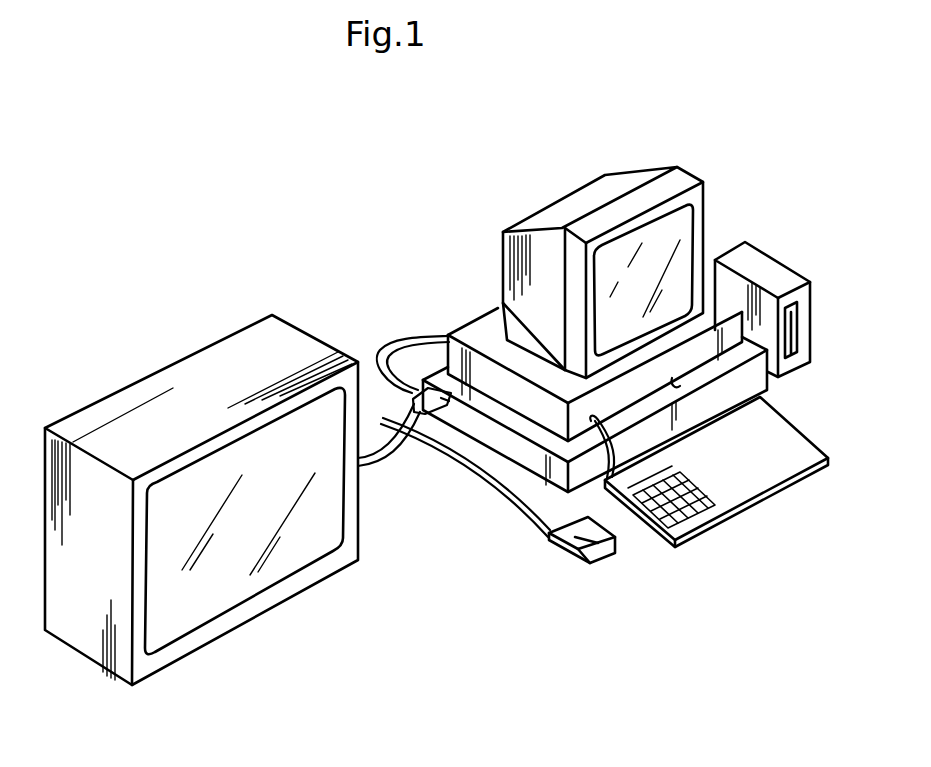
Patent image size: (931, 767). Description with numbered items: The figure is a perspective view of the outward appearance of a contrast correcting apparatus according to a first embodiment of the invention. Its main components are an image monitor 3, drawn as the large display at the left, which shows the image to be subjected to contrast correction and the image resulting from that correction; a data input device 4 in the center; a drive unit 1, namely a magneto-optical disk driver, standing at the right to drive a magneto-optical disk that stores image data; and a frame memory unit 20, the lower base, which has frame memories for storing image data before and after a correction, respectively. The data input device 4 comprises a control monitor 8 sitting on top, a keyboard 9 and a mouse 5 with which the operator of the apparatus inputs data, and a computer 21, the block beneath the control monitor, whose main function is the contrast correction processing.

The drive unit 1 is at (756, 257).
The image monitor 3 is at (319, 338).
The data input device 4 is at (494, 251).
The mouse 5 is at (562, 548).
The control monitor 8 is at (567, 202).
The keyboard 9 is at (735, 497).
The frame memory unit 20 is at (758, 378).
The computer 21 is at (463, 325).